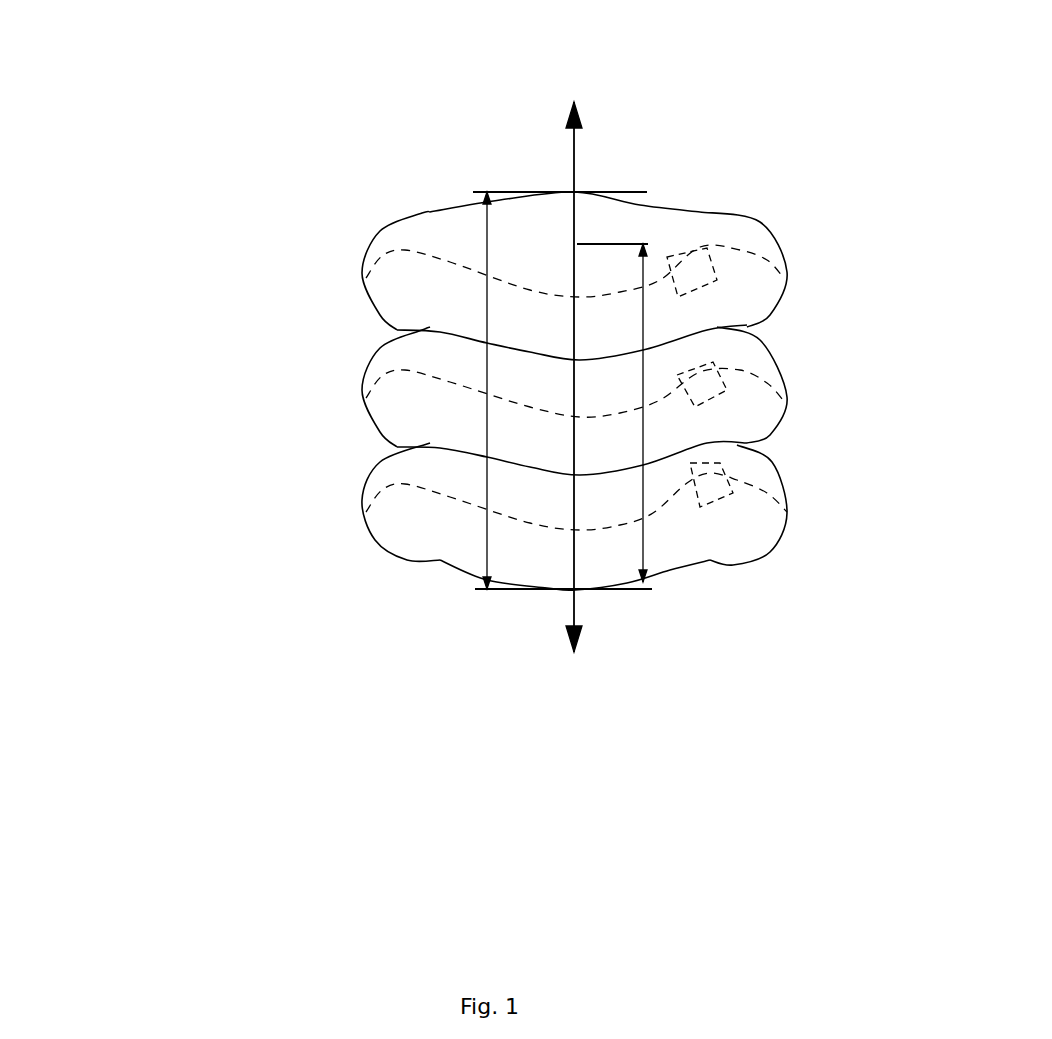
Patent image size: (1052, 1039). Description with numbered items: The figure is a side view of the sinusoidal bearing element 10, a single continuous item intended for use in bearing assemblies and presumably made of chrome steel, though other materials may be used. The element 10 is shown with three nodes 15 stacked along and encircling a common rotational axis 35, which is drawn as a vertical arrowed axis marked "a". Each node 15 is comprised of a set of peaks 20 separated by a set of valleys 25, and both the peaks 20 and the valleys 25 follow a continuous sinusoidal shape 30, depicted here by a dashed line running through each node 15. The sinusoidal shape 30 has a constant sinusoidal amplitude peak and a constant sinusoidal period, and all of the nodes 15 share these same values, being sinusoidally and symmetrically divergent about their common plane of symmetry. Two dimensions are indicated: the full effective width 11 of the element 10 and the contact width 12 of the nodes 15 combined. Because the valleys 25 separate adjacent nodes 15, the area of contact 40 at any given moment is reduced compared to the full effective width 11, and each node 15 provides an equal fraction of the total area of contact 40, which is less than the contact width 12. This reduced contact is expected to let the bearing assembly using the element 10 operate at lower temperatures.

The sinusoidal bearing element 10 is at (242, 212).
The full effective width 11 is at (483, 240).
The contact width 12 is at (640, 340).
The node 15 is at (727, 185).
The peak 20 is at (373, 258).
The valley 25 is at (400, 330).
The sinusoidal shape 30 is at (615, 408).
The rotational axis 35 is at (575, 173).
The area of contact 40 is at (703, 250).